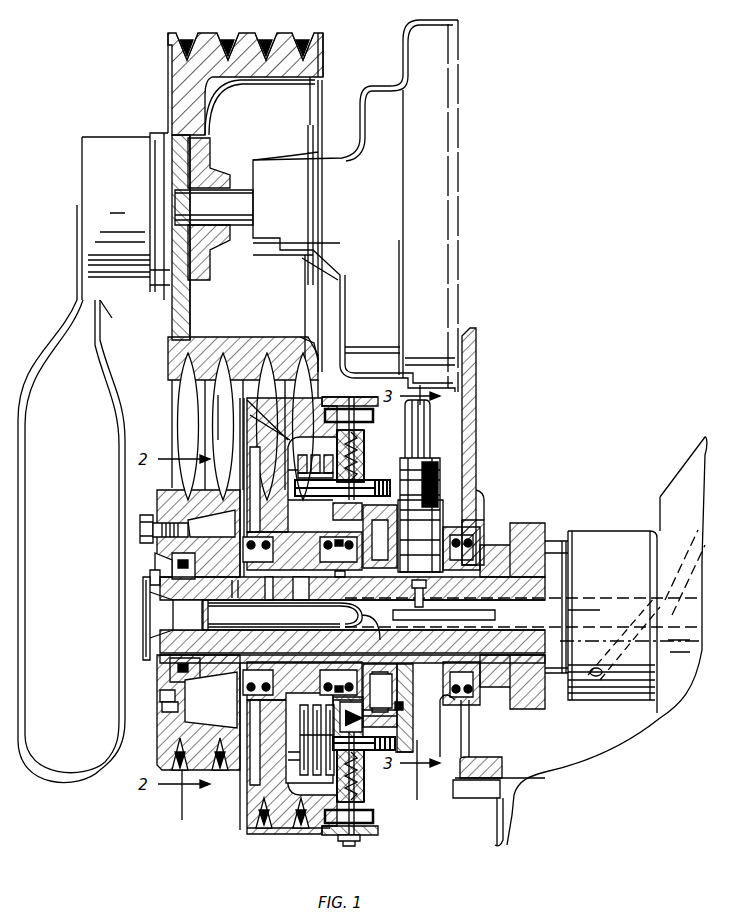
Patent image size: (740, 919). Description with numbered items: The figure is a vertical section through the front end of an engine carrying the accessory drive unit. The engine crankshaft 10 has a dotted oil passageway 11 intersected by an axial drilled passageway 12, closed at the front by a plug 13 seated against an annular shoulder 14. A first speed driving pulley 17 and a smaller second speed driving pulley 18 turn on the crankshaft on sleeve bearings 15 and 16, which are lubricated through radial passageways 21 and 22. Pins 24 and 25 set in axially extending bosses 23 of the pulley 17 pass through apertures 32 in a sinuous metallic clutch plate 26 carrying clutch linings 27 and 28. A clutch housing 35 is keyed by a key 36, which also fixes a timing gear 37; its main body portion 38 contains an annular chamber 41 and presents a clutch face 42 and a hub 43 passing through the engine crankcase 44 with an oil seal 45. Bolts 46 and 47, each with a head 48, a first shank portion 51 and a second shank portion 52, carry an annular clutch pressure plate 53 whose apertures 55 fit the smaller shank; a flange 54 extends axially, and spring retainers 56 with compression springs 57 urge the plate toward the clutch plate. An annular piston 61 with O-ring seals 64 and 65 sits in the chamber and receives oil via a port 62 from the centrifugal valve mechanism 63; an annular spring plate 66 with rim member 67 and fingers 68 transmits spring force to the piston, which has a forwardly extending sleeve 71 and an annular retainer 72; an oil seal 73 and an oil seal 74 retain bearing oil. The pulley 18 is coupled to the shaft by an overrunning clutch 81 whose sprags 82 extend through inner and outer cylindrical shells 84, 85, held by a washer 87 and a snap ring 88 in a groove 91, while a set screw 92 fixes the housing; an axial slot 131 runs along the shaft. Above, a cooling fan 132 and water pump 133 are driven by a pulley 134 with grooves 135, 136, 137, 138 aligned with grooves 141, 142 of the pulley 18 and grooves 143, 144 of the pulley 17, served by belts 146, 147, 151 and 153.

The engine crankshaft 10 is at (618, 533).
The oil passageway 11 is at (690, 530).
The drilled passageway 12 is at (240, 614).
The plug 13 is at (200, 610).
The annular shoulder 14 is at (208, 616).
The sleeve bearing 15 is at (205, 560).
The sleeve bearing 16 is at (290, 608).
The first speed driving pulley 17 is at (340, 397).
The second speed driving pulley 18 is at (191, 487).
The radial passageway 21 is at (240, 588).
The radial passageway 22 is at (305, 606).
The axially extending boss 23 is at (342, 838).
The pin 24 is at (370, 414).
The pin 25 is at (372, 820).
The sinuous metallic clutch plate 26 is at (368, 425).
The clutch lining 27 is at (340, 445).
The clutch lining 28 is at (365, 440).
The aperture 32 is at (355, 400).
The clutch housing 35 is at (438, 482).
The key 36 is at (495, 613).
The timing gear 37 is at (540, 525).
The main body portion 38 is at (405, 722).
The annular chamber 41 is at (405, 712).
The clutch face 42 is at (364, 452).
The hub 43 is at (486, 545).
The engine crankcase 44 is at (482, 500).
The oil seal 45 is at (478, 690).
The bolt 46 is at (364, 740).
The bolt 47 is at (342, 490).
The bolt head 48 is at (298, 470).
The first shank portion 51 is at (315, 479).
The second shank portion 52 is at (347, 512).
The clutch pressure plate 53 is at (322, 708).
The annular flange 54 is at (348, 717).
The aperture 55 is at (330, 738).
The spring retainer 56 is at (330, 488).
The compression spring 57 is at (330, 500).
The annular piston 61 is at (382, 575).
The port 62 is at (419, 486).
The centrifugal valve mechanism 63 is at (428, 458).
The O-ring seal 64 is at (375, 635).
The O-ring seal 65 is at (380, 536).
The annular spring plate 66 is at (400, 737).
The outer circumferential rim member 67 is at (410, 754).
The finger 68 is at (345, 537).
The forwardly extending sleeve 71 is at (340, 578).
The annular retainer 72 is at (300, 532).
The seal 73 is at (325, 548).
The oil seal 74 is at (246, 550).
The overrunning clutch 81 is at (170, 702).
The sprag 82 is at (190, 535).
The inner cylindrical shell 84 is at (160, 560).
The outer cylindrical shell 85 is at (170, 705).
The washer 87 is at (162, 692).
The snap ring 88 is at (150, 655).
The groove 91 is at (150, 577).
The set screw 92 is at (403, 705).
The axial slot 131 is at (472, 580).
The cooling fan 132 is at (80, 330).
The water pump 133 is at (452, 108).
The pulley 134 is at (302, 45).
The groove 135 is at (188, 45).
The groove 136 is at (229, 45).
The groove 137 is at (267, 45).
The groove 138 is at (323, 40).
The groove 141 is at (175, 755).
The groove 142 is at (218, 770).
The groove 143 is at (260, 828).
The groove 144 is at (296, 828).
The belt 146 is at (270, 345).
The belt 147 is at (312, 345).
The belt 151 is at (182, 405).
The belt 153 is at (220, 423).